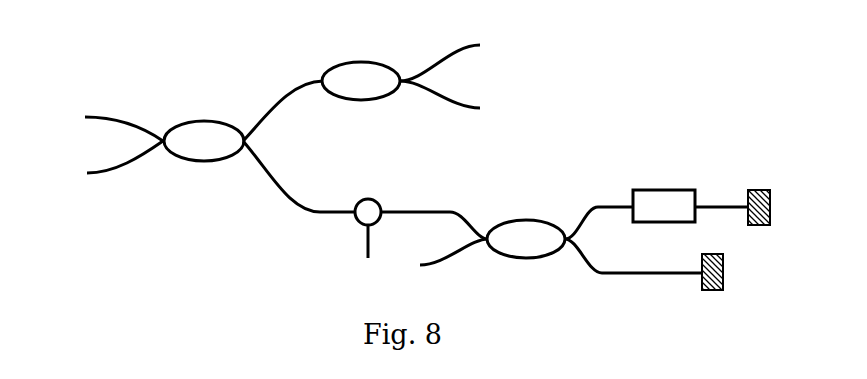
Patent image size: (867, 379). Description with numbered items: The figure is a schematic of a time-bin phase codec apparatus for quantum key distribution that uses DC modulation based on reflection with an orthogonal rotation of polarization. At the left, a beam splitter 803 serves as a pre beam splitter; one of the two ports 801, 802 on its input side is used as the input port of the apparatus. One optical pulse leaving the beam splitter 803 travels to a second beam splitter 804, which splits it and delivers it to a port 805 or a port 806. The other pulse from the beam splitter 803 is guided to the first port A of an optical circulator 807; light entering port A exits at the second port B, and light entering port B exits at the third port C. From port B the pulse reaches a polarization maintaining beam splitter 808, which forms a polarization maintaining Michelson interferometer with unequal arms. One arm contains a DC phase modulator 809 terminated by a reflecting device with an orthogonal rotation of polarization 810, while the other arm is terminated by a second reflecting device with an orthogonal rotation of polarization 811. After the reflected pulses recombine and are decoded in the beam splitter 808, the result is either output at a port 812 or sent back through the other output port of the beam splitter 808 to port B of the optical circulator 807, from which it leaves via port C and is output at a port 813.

The port 801 is at (104, 124).
The port 802 is at (104, 163).
The beam splitter 803 is at (204, 141).
The beam splitter 804 is at (361, 81).
The port 805 is at (459, 60).
The port 806 is at (459, 101).
The optical circulator 807 is at (369, 213).
The polarization maintaining beam splitter 808 is at (526, 239).
The DC phase modulator 809 is at (664, 206).
The reflecting device with an orthogonal rotation of polarization 810 is at (758, 198).
The reflecting device with an orthogonal rotation of polarization 811 is at (712, 263).
The port 812 is at (437, 263).
The port 813 is at (349, 250).